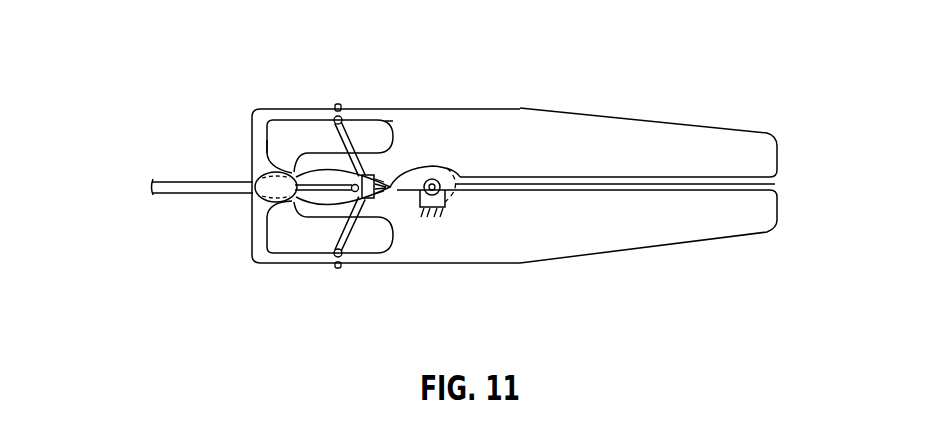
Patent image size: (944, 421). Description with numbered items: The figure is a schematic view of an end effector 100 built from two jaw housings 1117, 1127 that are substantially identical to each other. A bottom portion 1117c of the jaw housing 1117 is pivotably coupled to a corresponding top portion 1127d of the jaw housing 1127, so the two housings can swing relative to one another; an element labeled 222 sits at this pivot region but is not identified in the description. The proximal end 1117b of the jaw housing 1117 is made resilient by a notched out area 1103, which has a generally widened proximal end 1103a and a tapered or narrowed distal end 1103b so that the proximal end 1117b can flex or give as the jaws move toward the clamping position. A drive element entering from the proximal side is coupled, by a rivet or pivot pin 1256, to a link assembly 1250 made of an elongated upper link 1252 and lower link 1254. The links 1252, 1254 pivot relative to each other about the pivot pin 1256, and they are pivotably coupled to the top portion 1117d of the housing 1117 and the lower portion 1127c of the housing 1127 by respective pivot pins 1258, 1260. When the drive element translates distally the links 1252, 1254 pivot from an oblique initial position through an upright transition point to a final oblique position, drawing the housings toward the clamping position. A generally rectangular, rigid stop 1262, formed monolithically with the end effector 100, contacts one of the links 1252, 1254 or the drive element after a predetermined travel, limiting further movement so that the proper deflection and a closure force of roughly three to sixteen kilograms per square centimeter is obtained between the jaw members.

The end effector 100 is at (689, 72).
The jaw housing 1117 is at (707, 128).
The jaw housing 1127 is at (707, 238).
The proximal end of jaw housing 1117b is at (257, 109).
The bottom portion of jaw housing 1117c is at (447, 168).
The top portion of jaw housing 1117d is at (377, 111).
The lower portion of jaw housing 1127c is at (408, 258).
The top portion of jaw housing 1127d is at (460, 196).
The notched out area 1103 is at (279, 122).
The widened proximal end 1103a is at (265, 149).
The tapered distal end 1103b is at (390, 122).
The link assembly 1250 is at (316, 175).
The upper link 1252 is at (385, 150).
The lower link 1254 is at (340, 237).
The pivot pin 1256 is at (300, 196).
The pivot pin 1258 is at (340, 105).
The pivot pin 1260 is at (338, 269).
The stop 1262 is at (369, 200).
The pivot pin 222 is at (434, 216).